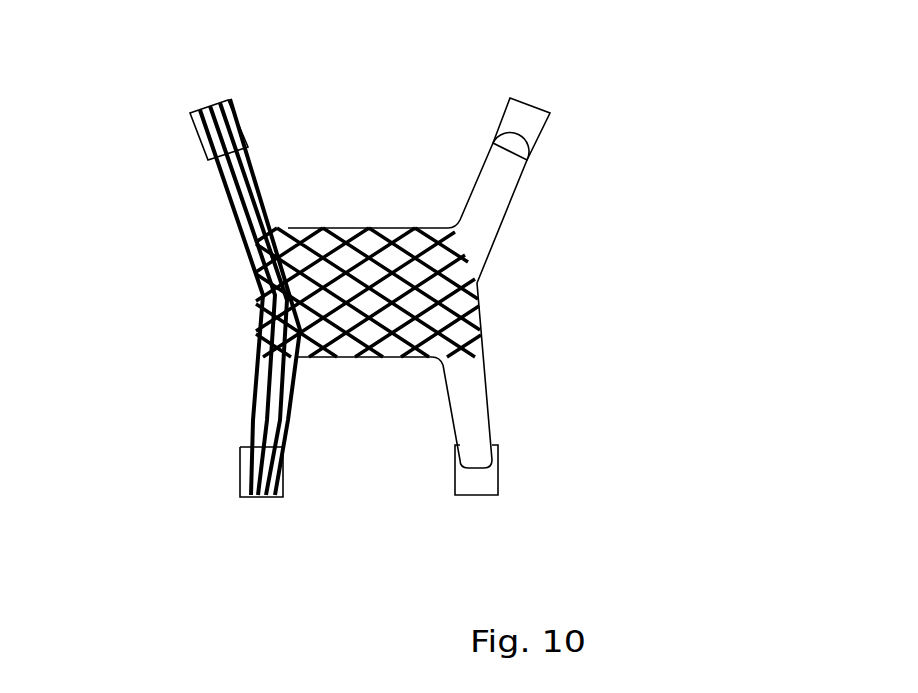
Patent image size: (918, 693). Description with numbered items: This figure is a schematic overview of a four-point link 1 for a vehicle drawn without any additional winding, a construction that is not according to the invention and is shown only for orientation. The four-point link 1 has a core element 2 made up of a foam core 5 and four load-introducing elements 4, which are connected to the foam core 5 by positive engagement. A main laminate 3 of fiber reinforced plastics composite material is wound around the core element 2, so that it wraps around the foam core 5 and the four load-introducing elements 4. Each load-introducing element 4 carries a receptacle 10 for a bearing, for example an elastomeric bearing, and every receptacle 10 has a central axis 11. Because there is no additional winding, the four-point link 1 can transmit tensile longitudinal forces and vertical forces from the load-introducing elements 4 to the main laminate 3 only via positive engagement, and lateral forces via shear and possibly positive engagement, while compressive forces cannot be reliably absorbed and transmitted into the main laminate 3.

The four-point link 1 is at (548, 314).
The core element 2 is at (503, 402).
The main laminate 3 is at (237, 214).
The load-introducing element 4 is at (188, 122).
The foam core 5 is at (492, 190).
The receptacle 10 is at (190, 156).
The central axis 11 is at (193, 140).